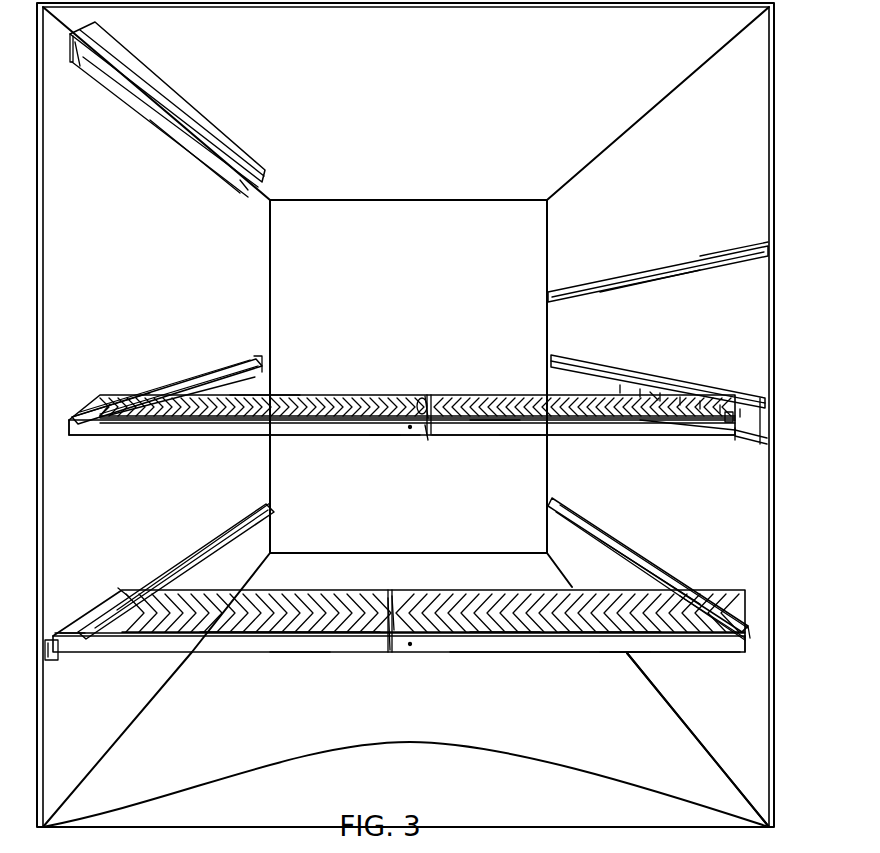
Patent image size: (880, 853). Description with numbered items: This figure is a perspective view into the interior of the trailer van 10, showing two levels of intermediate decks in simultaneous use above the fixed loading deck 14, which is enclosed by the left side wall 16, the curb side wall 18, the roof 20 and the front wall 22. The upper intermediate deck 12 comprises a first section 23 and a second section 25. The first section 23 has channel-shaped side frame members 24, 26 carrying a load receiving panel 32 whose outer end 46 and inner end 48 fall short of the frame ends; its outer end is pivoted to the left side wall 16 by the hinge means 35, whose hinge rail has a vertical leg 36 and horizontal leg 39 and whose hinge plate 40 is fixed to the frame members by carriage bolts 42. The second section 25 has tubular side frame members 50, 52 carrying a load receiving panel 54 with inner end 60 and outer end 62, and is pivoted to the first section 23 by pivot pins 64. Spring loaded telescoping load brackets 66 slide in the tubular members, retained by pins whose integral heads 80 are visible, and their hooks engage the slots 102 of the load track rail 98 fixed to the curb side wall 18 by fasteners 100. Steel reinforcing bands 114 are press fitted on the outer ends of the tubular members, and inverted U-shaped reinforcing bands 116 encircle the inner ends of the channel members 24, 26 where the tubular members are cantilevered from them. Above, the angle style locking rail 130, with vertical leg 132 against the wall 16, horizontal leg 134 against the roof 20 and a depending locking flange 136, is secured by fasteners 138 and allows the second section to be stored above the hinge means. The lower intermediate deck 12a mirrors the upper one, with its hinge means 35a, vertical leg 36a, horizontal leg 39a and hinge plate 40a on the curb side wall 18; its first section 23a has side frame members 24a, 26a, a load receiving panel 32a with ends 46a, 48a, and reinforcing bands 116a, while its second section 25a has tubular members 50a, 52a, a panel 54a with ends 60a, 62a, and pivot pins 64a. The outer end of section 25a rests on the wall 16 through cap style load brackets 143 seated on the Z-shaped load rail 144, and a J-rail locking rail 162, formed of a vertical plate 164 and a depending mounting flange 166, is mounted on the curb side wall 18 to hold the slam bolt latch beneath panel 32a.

The trailer van 10 is at (40, 180).
The intermediate deck 12 is at (396, 445).
The lower intermediate deck 12a is at (401, 634).
The fixed loading deck 14 is at (275, 745).
The left side wall 16 is at (117, 718).
The curb side wall 18 is at (708, 727).
The roof 20 is at (387, 142).
The front wall 22 is at (387, 271).
The first section 23 is at (350, 440).
The first section of lower intermediate deck 23a is at (660, 655).
The side frame member 24 is at (251, 432).
The side frame member of lower deck first section 24a is at (528, 596).
The second section 25 is at (516, 434).
The second section of lower intermediate deck 25a is at (290, 660).
The side frame member 26 is at (338, 394).
The side frame member of lower deck first section 26a is at (545, 650).
The load receiving panel 32 is at (255, 395).
The load receiving panel of lower deck first section 32a is at (502, 640).
The hinge means 35 is at (70, 440).
The hinge means of lower intermediate deck 35a is at (674, 578).
The vertical leg 36 is at (178, 373).
The vertical leg of lower deck hinge rail 36a is at (655, 569).
The horizontal leg 39 is at (260, 362).
The horizontal leg of lower deck hinge rail 39a is at (745, 652).
The hinge plate 40 is at (133, 396).
The hinge plate of lower deck hinge means 40a is at (708, 608).
The carriage bolts 42 is at (92, 413).
The outer end of load receiving panel 46 is at (142, 424).
The outer end of lower deck load receiving panel 46a is at (640, 642).
The inner end of load receiving panel 48 is at (425, 397).
The inner end of lower deck load receiving panel 48a is at (420, 596).
The tubular side frame member 50 is at (553, 426).
The tubular side frame member of lower deck second section 50a is at (255, 594).
The tubular side frame member 52 is at (514, 394).
The tubular side frame member of lower deck second section 52a is at (325, 636).
The load receiving panel 54 is at (481, 424).
The load receiving panel of lower deck second section 54a is at (262, 636).
The inner end of load receiving panel 60 is at (433, 430).
The inner end of lower deck second section panel 60a is at (365, 632).
The outer end of load receiving panel 62 is at (680, 416).
The outer end of lower deck second section panel 62a is at (164, 571).
The pivot pin 64 is at (410, 428).
The pivot pin of lower deck 64a is at (411, 646).
The telescoping load bracket 66 is at (652, 392).
The integral head 80 is at (729, 432).
The load track rail 98 is at (681, 405).
The fasteners 100 is at (680, 386).
The slots 102 is at (705, 398).
The reinforcing steel band 114 is at (734, 440).
The U-shaped reinforcing band 116 is at (424, 440).
The U-shaped reinforcing band of lower deck 116a is at (386, 596).
The locking rail 130 is at (152, 134).
The vertical leg 132 is at (200, 153).
The horizontal leg 134 is at (158, 113).
The locking flange 136 is at (148, 118).
The fasteners 138 is at (80, 66).
The cap style load bracket 143 is at (124, 588).
The load rail 144 is at (56, 658).
The locking rail 162 is at (658, 274).
The vertical plate 164 is at (730, 262).
The mounting flange 166 is at (695, 277).